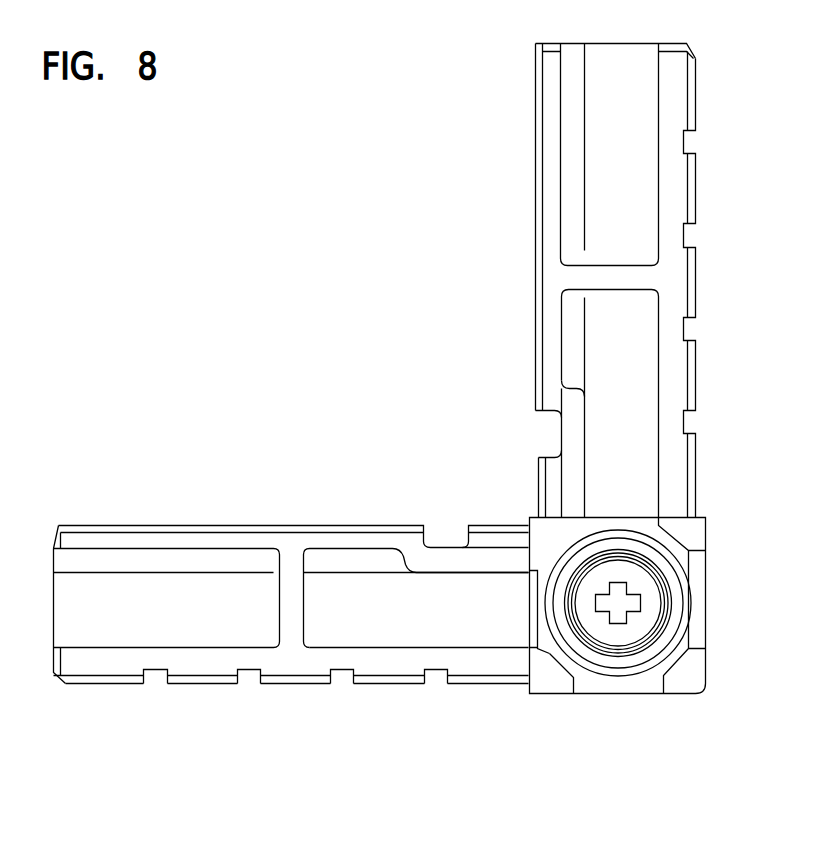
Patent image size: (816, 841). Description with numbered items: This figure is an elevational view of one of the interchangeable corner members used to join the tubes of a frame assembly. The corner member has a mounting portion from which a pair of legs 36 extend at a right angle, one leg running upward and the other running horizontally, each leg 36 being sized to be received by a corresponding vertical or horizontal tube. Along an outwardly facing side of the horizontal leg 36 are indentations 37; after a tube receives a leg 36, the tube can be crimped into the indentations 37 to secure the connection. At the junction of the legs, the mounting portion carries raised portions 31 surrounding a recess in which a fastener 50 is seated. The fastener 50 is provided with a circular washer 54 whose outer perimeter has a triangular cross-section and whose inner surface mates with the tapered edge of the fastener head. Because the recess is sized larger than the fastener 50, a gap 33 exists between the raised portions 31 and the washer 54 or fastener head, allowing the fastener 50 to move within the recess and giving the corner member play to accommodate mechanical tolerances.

The legs 36 is at (483, 183).
The indentations 37 is at (157, 672).
The raised portions 31 is at (542, 532).
The gap 33 is at (663, 538).
The washer 54 is at (682, 607).
The fastener 50 is at (669, 578).